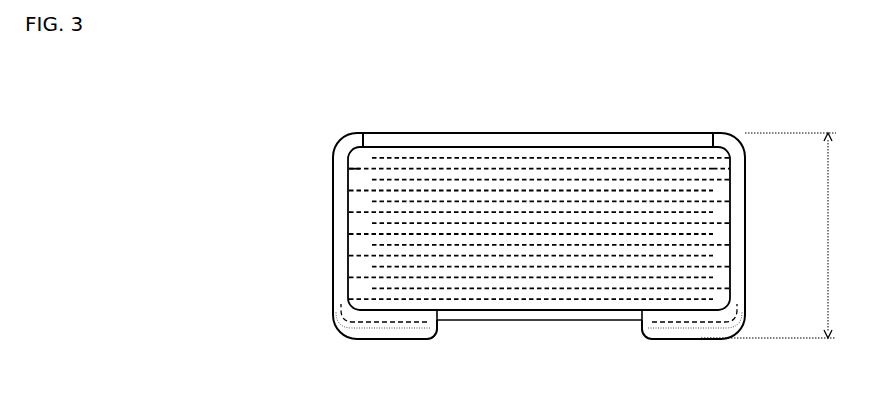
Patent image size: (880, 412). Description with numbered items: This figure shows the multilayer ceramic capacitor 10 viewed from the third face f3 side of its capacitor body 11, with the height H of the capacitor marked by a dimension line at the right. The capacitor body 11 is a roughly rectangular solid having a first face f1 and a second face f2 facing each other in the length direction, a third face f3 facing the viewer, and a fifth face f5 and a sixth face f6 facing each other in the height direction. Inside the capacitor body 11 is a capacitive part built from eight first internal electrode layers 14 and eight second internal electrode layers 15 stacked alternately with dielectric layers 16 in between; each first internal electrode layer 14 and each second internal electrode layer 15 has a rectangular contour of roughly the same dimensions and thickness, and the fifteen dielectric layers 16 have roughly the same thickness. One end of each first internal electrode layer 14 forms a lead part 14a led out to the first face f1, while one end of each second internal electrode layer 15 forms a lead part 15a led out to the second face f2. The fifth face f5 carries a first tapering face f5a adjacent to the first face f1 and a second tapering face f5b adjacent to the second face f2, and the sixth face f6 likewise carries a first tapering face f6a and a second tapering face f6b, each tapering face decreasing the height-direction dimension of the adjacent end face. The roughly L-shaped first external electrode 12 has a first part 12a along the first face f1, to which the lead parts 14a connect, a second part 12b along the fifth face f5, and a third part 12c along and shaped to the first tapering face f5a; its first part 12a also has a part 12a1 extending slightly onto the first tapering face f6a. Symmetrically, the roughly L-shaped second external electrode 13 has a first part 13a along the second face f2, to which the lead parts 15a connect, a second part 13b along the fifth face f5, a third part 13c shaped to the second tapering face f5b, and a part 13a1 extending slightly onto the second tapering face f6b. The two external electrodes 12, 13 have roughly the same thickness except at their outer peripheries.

The multilayer ceramic capacitor 10 is at (414, 129).
The capacitor body 11 is at (445, 132).
The first external electrode 12 is at (333, 205).
The first part of first external electrode 12a is at (340, 268).
The part extending onto first tapering face 12a1 is at (346, 142).
The second part of first external electrode 12b is at (403, 336).
The third part of first external electrode 12c is at (352, 327).
The second external electrode 13 is at (747, 204).
The first part of second external electrode 13a is at (737, 267).
The part extending onto second tapering face 13a1 is at (732, 141).
The second part of second external electrode 13b is at (676, 337).
The third part of second external electrode 13c is at (743, 318).
The first internal electrode layers 14 is at (495, 168).
The lead part of first internal electrode layer 14a is at (350, 167).
The second internal electrode layers 15 is at (594, 175).
The lead part of second internal electrode layer 15a is at (722, 172).
The dielectric layers 16 is at (632, 155).
The first face f1 is at (348, 242).
The second face f2 is at (747, 240).
The third face f3 is at (356, 178).
The fifth face f5 is at (546, 322).
The first tapering face f5a is at (364, 344).
The second tapering face f5b is at (713, 342).
The sixth face f6 is at (550, 132).
The first tapering face of sixth face f6a is at (367, 139).
The second tapering face of sixth face f6b is at (710, 134).
The height H is at (773, 235).